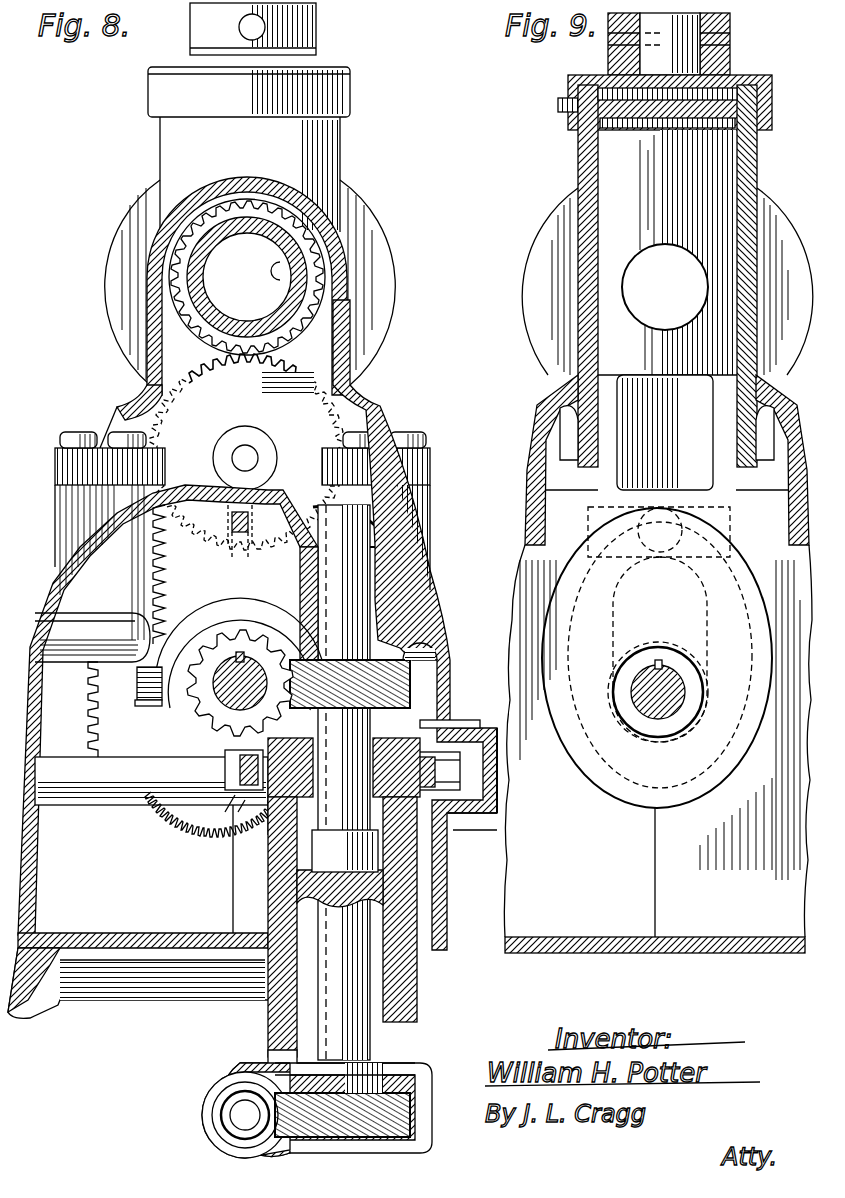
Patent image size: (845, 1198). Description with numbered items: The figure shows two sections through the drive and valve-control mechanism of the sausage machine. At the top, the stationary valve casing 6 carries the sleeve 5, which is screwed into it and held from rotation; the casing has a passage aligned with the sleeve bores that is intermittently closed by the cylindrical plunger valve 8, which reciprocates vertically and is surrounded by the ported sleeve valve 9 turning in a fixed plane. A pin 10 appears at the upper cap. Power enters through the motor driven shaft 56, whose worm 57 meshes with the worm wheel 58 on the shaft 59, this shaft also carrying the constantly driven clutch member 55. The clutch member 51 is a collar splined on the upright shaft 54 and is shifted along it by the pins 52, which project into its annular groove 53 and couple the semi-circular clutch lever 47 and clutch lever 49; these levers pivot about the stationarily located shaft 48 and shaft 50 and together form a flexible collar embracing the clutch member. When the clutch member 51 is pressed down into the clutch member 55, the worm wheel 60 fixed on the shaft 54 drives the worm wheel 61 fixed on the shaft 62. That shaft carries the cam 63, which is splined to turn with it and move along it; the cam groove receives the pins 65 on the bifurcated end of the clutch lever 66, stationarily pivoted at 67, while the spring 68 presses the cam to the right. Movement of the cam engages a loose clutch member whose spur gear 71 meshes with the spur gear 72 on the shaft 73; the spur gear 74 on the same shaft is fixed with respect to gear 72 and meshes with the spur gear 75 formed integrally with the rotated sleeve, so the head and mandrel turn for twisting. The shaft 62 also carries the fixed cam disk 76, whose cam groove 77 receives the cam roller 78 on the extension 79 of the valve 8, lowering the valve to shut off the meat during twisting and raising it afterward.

In FIG. 8, the sleeve 5 is at (290, 273).
In FIG. 8, the valve casing 6 is at (345, 150).
In FIG. 9, the valve casing 6 is at (578, 148).
In FIG. 9, the plunger valve 8 is at (615, 207).
In FIG. 9, the sleeve valve 9 is at (597, 163).
In FIG. 8, the pin 10 is at (240, 27).
In FIG. 8, the clutch lever 47 is at (250, 800).
In FIG. 8, the shaft 48 is at (452, 816).
In FIG. 8, the clutch lever 49 is at (240, 795).
In FIG. 8, the shaft 50 is at (103, 800).
In FIG. 8, the clutch member 51 is at (268, 832).
In FIG. 8, the pins 52 is at (225, 762).
In FIG. 8, the annular groove 53 is at (452, 724).
In FIG. 8, the shaft 54 is at (344, 782).
In FIG. 8, the clutch member 55 is at (393, 850).
In FIG. 8, the motor driven shaft 56 is at (243, 1110).
In FIG. 8, the worm 57 is at (217, 1126).
In FIG. 8, the worm wheel 58 is at (382, 1105).
In FIG. 8, the shaft 59 is at (345, 880).
In FIG. 8, the worm wheel 60 is at (410, 688).
In FIG. 8, the worm wheel 61 is at (200, 703).
In FIG. 8, the shaft 62 is at (232, 692).
In FIG. 9, the shaft 62 is at (648, 680).
In FIG. 8, the cam 63 is at (262, 606).
In FIG. 8, the pins 65 is at (137, 688).
In FIG. 8, the clutch lever 66 is at (226, 576).
In FIG. 8, the pivot 67 is at (75, 652).
In FIG. 8, the spring 68 is at (252, 530).
In FIG. 8, the spur gear 71 is at (130, 550).
In FIG. 8, the spur gear 72 is at (128, 366).
In FIG. 8, the shaft 73 is at (240, 456).
In FIG. 8, the spur gear 74 is at (290, 373).
In FIG. 8, the spur gear 75 is at (313, 238).
In FIG. 9, the cam disk 76 is at (615, 790).
In FIG. 9, the cam groove 77 is at (693, 805).
In FIG. 9, the cam roller 78 is at (642, 538).
In FIG. 9, the extension 79 is at (687, 412).